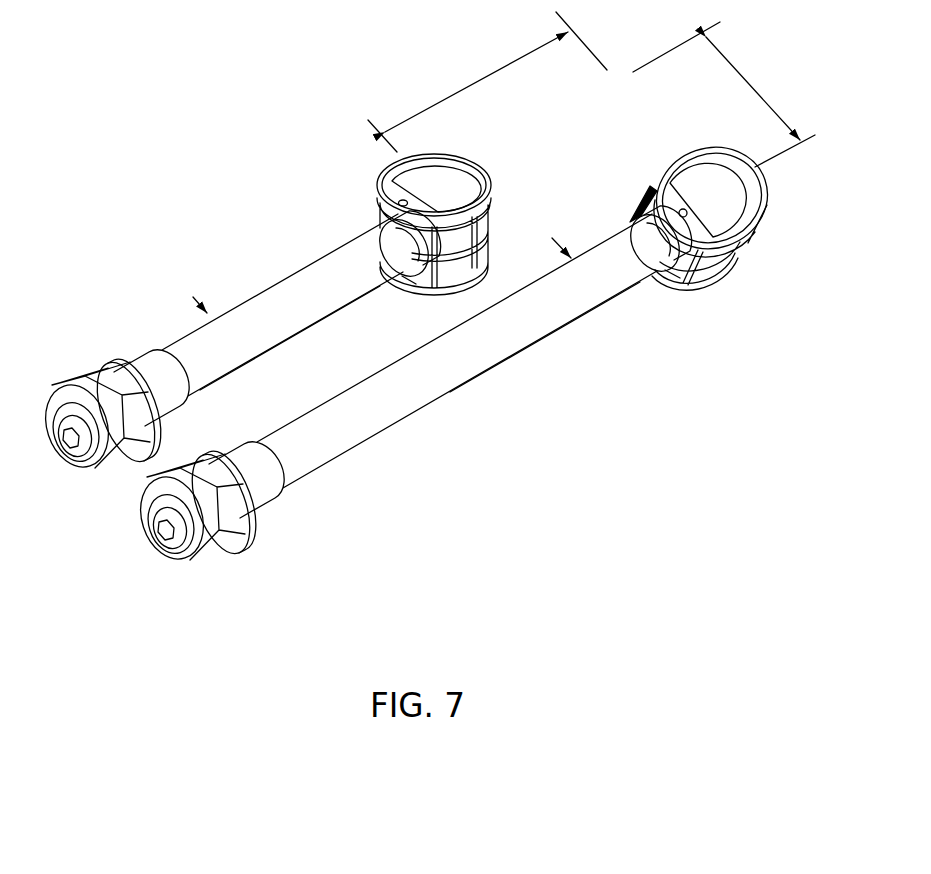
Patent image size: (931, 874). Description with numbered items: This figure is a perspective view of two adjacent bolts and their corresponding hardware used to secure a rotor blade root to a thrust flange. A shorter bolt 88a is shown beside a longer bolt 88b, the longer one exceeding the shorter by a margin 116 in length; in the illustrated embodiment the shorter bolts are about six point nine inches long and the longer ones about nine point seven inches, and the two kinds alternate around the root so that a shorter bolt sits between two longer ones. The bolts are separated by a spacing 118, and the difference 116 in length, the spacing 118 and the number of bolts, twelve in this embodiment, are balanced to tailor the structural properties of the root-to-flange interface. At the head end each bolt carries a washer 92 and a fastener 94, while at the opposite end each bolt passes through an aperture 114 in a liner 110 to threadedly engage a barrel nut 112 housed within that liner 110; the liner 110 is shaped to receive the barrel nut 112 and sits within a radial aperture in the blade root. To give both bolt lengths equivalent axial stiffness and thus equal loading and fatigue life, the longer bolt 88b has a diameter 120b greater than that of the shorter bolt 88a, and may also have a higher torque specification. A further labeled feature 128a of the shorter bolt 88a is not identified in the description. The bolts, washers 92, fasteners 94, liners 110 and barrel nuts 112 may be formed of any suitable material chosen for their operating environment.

The shorter bolt 88a is at (277, 292).
The longer bolt 88b is at (437, 387).
The washer 92 is at (119, 364).
The fastener 94 is at (122, 454).
The liner 110 is at (423, 180).
The barrel nut 112 is at (398, 204).
The aperture in liner 114 is at (412, 280).
The margin in length 116 is at (474, 83).
The spacing between bolts 118 is at (745, 79).
The diameter of longer bolt 120b is at (610, 302).
The first arm shaft 128a is at (253, 360).